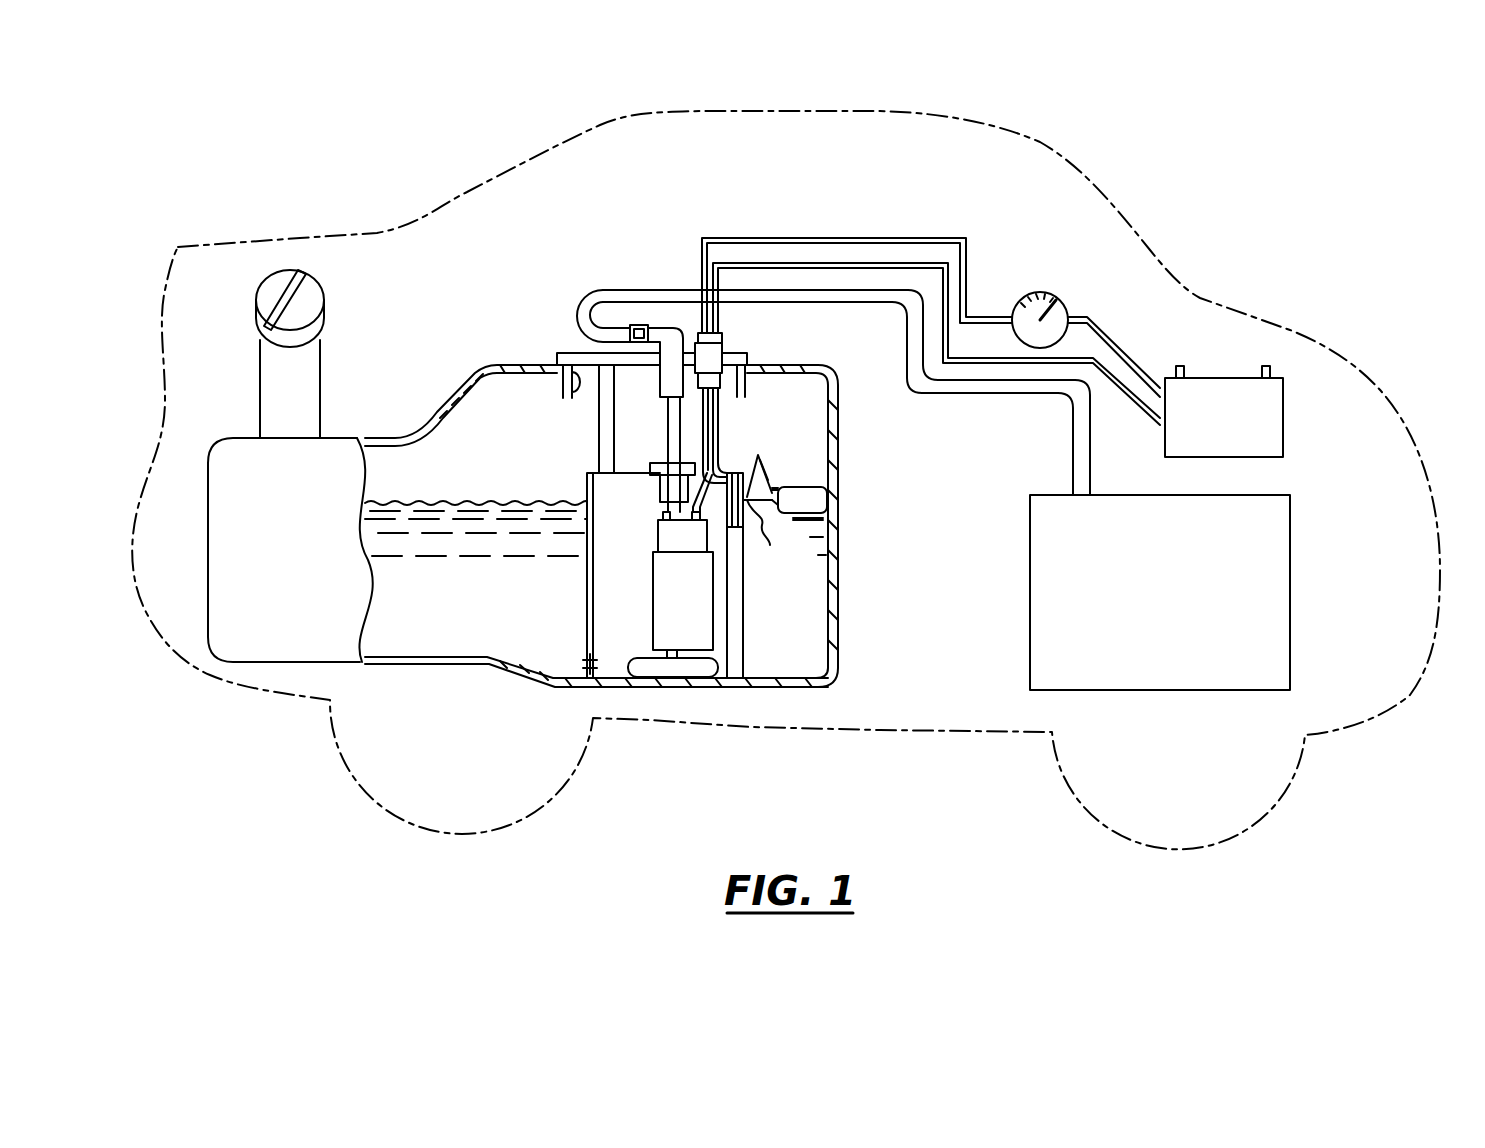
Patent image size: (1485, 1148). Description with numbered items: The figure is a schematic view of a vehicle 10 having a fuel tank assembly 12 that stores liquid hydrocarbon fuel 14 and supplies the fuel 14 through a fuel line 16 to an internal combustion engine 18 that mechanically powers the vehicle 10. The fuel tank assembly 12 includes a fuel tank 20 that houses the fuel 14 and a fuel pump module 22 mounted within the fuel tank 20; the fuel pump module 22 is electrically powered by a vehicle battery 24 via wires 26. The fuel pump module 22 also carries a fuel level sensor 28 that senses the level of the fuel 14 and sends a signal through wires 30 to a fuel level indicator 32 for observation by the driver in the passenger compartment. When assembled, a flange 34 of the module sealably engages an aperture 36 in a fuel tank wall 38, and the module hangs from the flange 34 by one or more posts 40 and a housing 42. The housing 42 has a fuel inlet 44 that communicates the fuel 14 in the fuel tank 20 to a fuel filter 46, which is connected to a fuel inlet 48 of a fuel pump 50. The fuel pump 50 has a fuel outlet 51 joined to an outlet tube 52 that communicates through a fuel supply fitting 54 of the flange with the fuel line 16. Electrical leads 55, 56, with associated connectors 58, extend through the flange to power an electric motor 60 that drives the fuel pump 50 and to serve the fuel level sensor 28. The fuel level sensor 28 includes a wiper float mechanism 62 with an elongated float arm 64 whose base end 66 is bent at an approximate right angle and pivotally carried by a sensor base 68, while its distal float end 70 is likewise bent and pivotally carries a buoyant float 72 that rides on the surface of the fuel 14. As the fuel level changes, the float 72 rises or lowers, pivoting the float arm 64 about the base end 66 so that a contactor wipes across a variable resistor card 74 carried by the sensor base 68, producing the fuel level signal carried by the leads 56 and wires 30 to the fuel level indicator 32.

The vehicle 10 is at (362, 162).
The fuel tank assembly 12 is at (425, 325).
The fuel 14 is at (452, 621).
The fuel line 16 is at (628, 298).
The internal combustion engine 18 is at (1146, 598).
The fuel tank 20 is at (338, 441).
The fuel pump module 22 is at (553, 483).
The vehicle battery 24 is at (1197, 373).
The wires 26 is at (823, 267).
The fuel level sensor 28 is at (743, 527).
The wires 30 is at (760, 241).
The fuel level indicator 32 is at (1052, 292).
The flange 34 is at (745, 372).
The aperture 36 is at (563, 385).
The fuel tank wall 38 is at (492, 363).
The posts 40 is at (600, 455).
The housing 42 is at (733, 660).
The fuel inlet 44 is at (583, 660).
The fuel filter 46 is at (628, 665).
The fuel inlet 48 is at (665, 658).
The fuel pump 50 is at (669, 618).
The fuel outlet 51 is at (662, 513).
The outlet tube 52 is at (668, 455).
The fuel supply fitting 54 is at (672, 330).
The electrical lead 55 is at (708, 415).
The electrical leads 56 is at (718, 442).
The connectors 58 is at (710, 380).
The electric motor 60 is at (680, 540).
The wiper float mechanism 62 is at (768, 489).
The float arm 64 is at (772, 478).
The base end 66 is at (770, 545).
The sensor base 68 is at (737, 530).
The distal float end 70 is at (830, 500).
The float 72 is at (780, 490).
The variable resistor card 74 is at (758, 470).